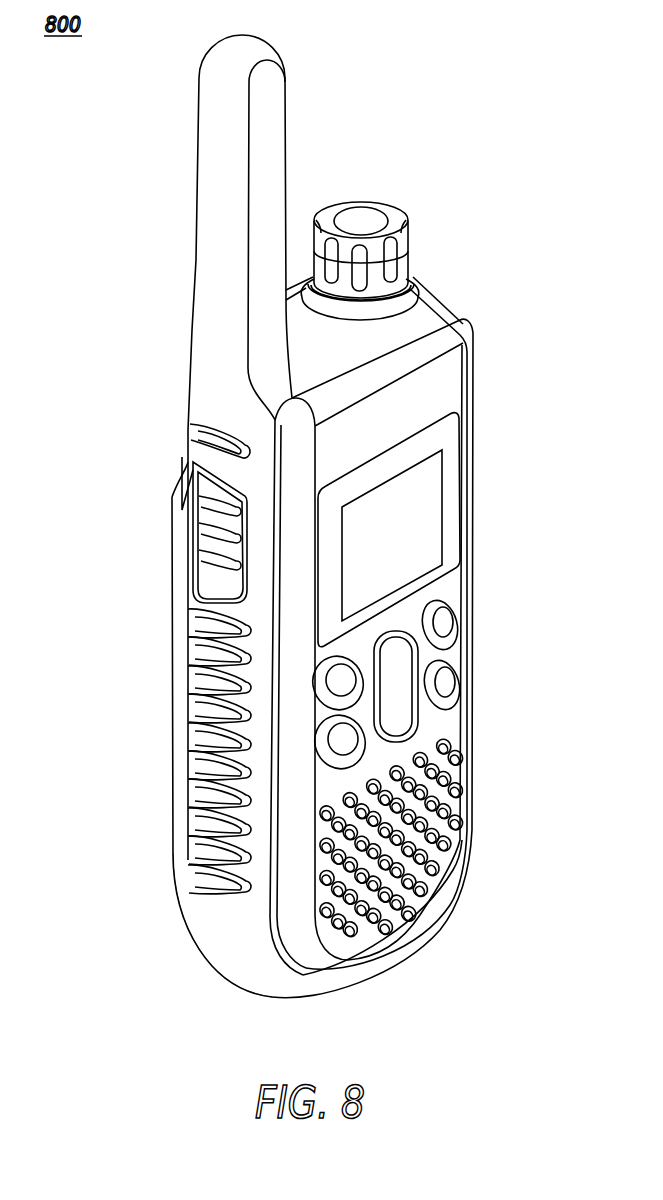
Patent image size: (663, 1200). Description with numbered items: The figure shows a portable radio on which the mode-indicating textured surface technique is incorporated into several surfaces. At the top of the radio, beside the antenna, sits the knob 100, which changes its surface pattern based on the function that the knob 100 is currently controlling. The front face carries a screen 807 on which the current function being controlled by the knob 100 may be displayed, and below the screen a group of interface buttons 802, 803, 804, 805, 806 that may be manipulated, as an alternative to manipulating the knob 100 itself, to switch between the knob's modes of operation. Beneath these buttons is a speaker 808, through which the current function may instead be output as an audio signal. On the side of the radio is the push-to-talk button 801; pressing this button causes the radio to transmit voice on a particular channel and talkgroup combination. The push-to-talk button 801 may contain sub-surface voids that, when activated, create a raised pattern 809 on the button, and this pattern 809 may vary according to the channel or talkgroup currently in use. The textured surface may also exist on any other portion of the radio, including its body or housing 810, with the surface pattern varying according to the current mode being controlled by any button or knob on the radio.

The knob 100 is at (365, 222).
The push-to-talk button 801 is at (197, 535).
The interface button 802 is at (338, 686).
The interface button 803 is at (340, 742).
The interface button 804 is at (446, 684).
The interface button 805 is at (398, 678).
The interface button 806 is at (446, 622).
The screen 807 is at (427, 514).
The speaker 808 is at (452, 810).
The raised pattern 809 is at (197, 494).
The body (housing) 810 is at (228, 940).